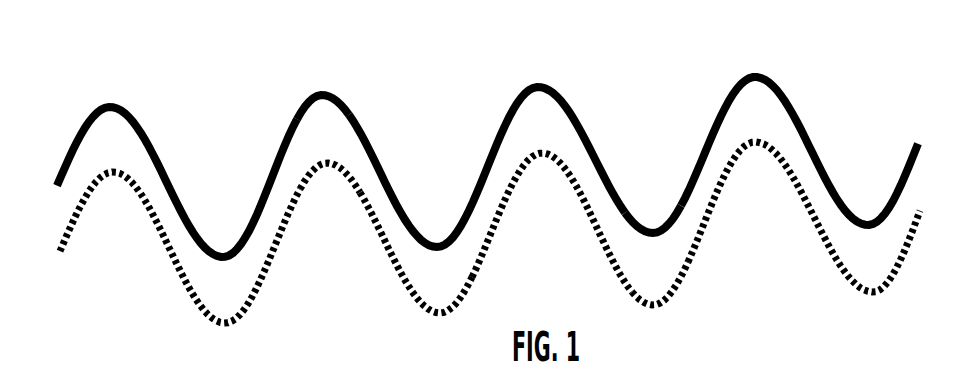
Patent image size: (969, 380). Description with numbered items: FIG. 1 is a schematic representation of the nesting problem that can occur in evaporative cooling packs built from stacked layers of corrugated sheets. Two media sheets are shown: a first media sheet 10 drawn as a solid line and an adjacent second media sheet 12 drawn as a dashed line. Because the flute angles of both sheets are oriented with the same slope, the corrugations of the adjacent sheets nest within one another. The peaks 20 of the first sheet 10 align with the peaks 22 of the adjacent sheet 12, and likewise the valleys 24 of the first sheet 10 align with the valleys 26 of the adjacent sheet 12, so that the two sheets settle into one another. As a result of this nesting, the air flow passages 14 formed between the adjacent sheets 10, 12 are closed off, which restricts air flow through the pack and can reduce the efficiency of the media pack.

The media sheet 10 is at (72, 142).
The media sheet 12 is at (77, 213).
The air flow passage 14 is at (440, 275).
The peak 20 is at (323, 92).
The peak 22 is at (328, 160).
The valley 24 is at (653, 228).
The valley 26 is at (657, 302).